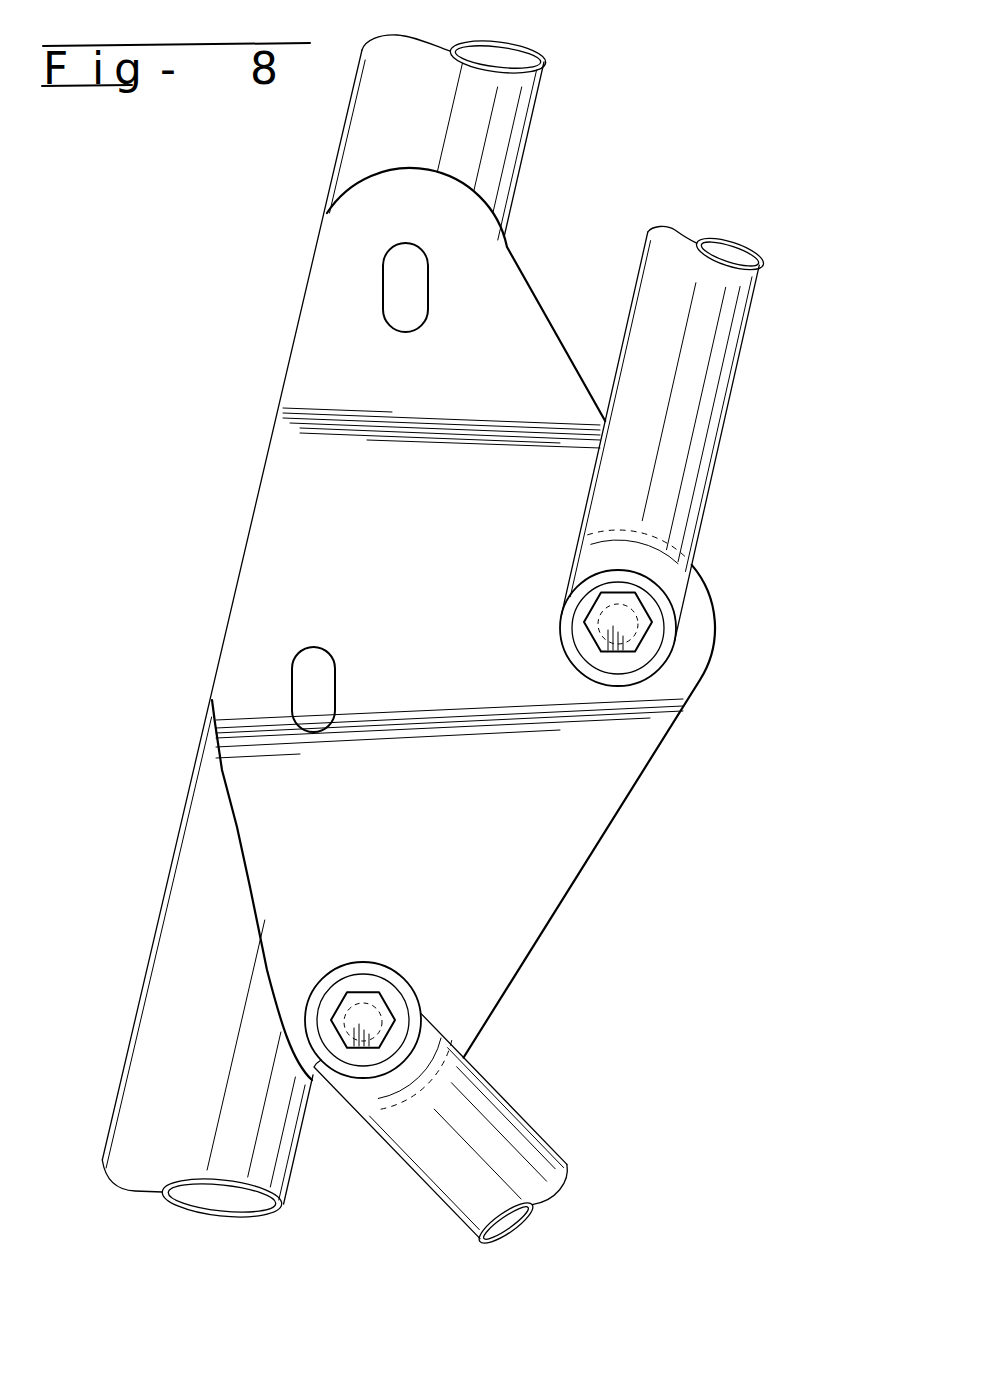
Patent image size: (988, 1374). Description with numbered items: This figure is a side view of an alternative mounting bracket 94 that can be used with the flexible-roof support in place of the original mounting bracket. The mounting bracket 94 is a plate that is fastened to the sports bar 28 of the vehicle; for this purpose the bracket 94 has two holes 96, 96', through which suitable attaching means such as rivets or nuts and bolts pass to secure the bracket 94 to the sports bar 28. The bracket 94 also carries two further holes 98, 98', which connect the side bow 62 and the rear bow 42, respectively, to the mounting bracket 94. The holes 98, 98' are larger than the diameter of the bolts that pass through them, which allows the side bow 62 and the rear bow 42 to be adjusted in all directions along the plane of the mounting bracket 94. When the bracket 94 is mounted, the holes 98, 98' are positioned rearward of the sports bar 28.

The sports bar 28 is at (507, 120).
The side bow 62 is at (728, 365).
The rear bow 42 is at (528, 1133).
The alternative mounting bracket 94 is at (593, 813).
The hole 96 is at (314, 273).
The hole 96' is at (231, 673).
The hole 98 is at (669, 627).
The hole 98' is at (445, 1020).